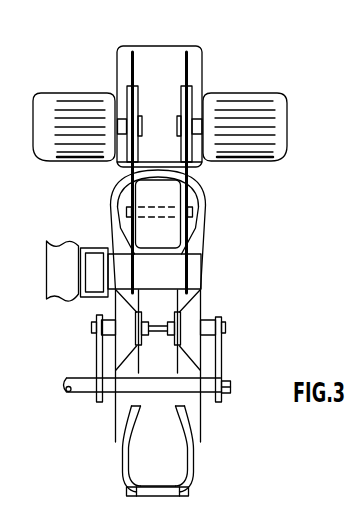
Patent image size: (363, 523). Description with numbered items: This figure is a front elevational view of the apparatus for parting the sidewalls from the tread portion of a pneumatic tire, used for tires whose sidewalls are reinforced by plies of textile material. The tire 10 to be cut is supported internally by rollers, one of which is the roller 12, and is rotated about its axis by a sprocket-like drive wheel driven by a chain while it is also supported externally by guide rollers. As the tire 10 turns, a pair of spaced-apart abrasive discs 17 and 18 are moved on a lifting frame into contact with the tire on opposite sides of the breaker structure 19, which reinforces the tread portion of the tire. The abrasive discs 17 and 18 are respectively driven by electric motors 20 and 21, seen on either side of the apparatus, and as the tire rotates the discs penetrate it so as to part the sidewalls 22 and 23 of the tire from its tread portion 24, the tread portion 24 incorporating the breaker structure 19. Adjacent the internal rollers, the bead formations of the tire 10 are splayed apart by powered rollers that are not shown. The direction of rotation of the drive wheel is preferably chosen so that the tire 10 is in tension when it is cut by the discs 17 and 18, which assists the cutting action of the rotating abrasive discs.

The tire 10 is at (193, 176).
The roller 12 is at (158, 217).
The abrasive disc 17 is at (123, 58).
The abrasive disc 18 is at (180, 58).
The breaker structure 19 is at (148, 158).
The electric motor 20 is at (63, 155).
The electric motor 21 is at (247, 150).
The sidewall 22 is at (108, 446).
The sidewall 23 is at (192, 442).
The tread portion 24 is at (140, 489).